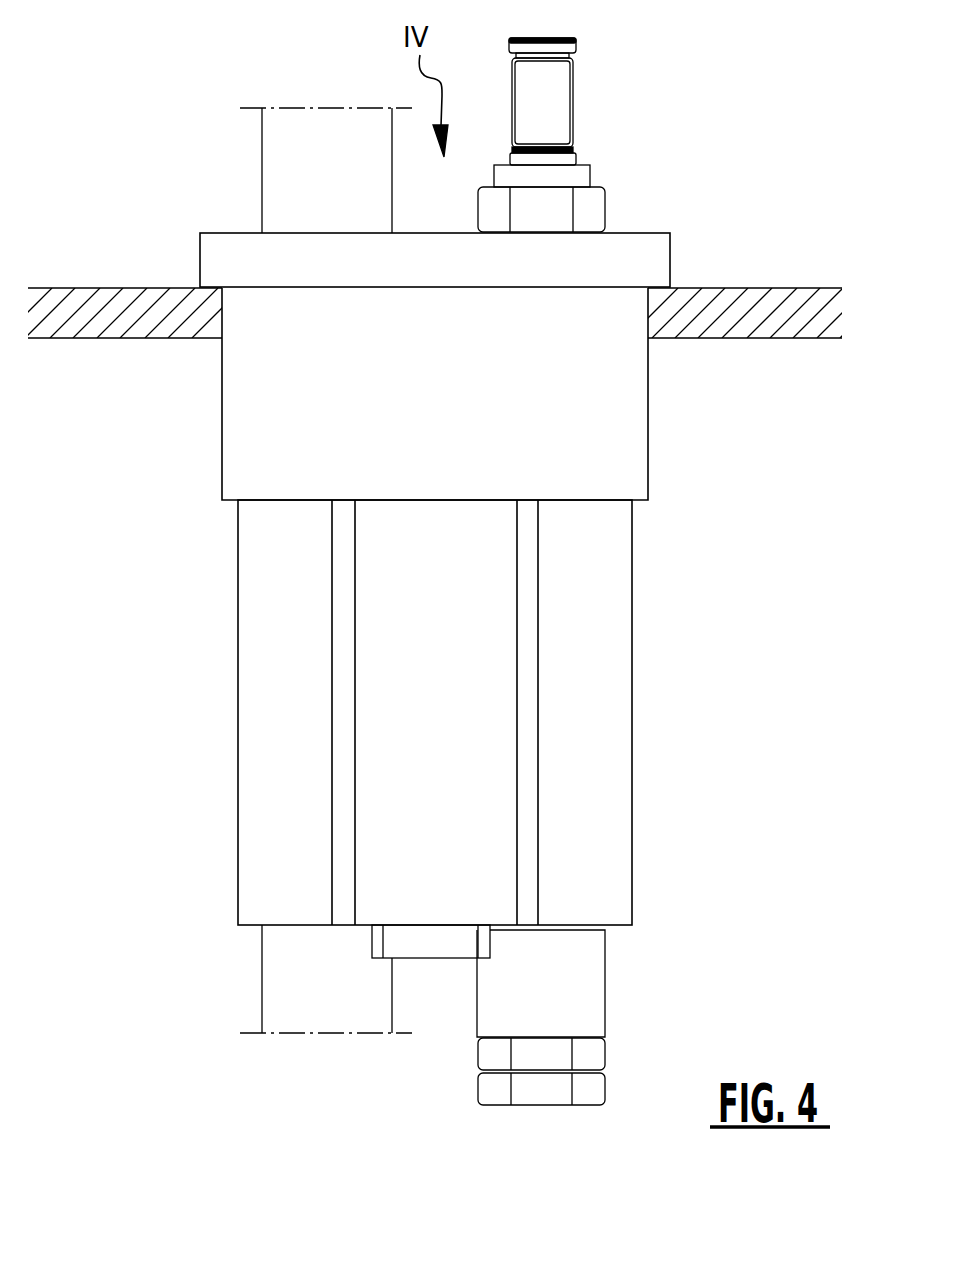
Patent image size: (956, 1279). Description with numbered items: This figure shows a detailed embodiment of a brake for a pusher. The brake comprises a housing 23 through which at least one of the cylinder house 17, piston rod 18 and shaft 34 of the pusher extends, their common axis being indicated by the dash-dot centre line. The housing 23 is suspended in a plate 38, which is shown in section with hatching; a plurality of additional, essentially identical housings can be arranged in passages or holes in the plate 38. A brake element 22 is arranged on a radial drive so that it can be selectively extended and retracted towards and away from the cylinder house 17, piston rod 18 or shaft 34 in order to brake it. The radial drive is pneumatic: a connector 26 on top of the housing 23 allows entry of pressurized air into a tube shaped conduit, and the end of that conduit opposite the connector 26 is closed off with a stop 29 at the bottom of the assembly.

The cylinder house 17 is at (248, 1016).
The piston rod 18 is at (260, 1010).
The brake element 22 is at (375, 945).
The housing 23 is at (233, 400).
The connector 26 is at (553, 97).
The stop 29 is at (662, 1048).
The shaft 34 is at (263, 172).
The plate 38 is at (755, 293).